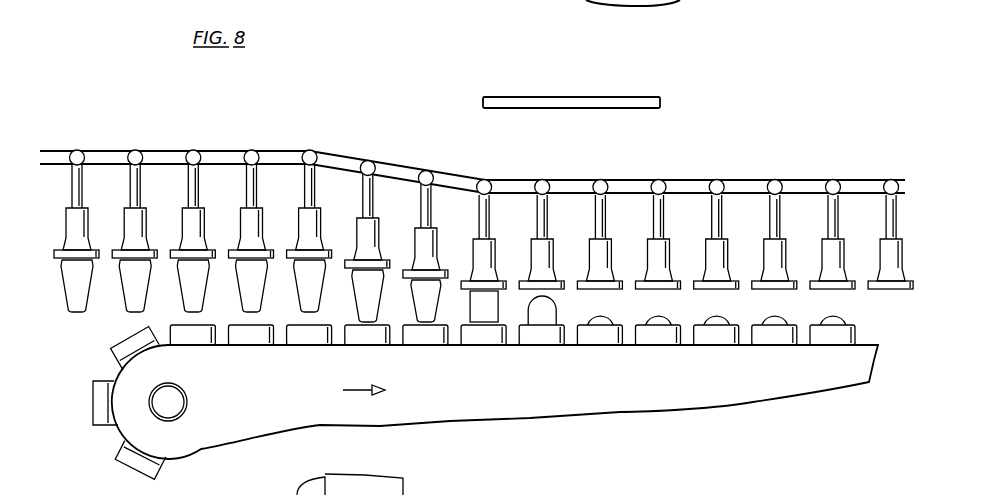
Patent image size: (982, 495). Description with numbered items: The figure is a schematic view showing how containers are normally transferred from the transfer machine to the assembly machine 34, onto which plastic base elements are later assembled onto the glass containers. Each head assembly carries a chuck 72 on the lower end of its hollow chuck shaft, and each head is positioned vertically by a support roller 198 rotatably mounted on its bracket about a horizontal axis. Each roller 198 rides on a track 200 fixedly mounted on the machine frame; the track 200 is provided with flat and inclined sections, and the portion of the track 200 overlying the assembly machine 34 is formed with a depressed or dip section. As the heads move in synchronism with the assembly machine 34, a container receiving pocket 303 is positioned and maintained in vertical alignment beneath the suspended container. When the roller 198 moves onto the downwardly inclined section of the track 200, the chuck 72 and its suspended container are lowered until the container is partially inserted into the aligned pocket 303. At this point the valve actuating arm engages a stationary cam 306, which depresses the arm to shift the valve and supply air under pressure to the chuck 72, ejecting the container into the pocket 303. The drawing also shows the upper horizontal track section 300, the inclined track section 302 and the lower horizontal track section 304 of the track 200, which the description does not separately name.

The track 200 is at (405, 160).
The upper horizontal track section 300 is at (109, 151).
The inclined track section 302 is at (345, 160).
The lower horizontal track section 304 is at (622, 185).
The support roller 198 is at (250, 150).
The chuck 72 is at (187, 223).
The stationary cam 306 is at (650, 97).
The assembly machine 34 is at (216, 370).
The pocket 303 is at (250, 345).